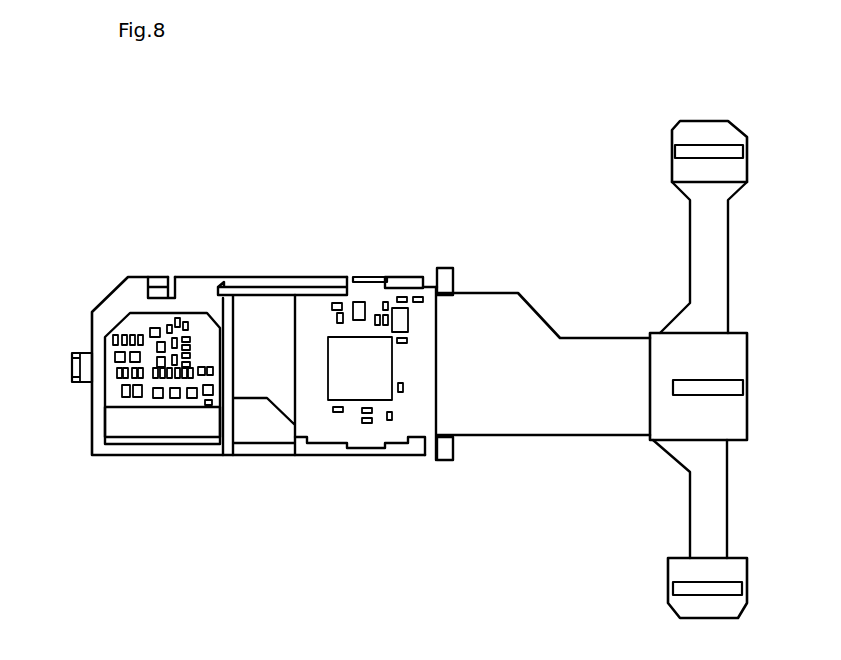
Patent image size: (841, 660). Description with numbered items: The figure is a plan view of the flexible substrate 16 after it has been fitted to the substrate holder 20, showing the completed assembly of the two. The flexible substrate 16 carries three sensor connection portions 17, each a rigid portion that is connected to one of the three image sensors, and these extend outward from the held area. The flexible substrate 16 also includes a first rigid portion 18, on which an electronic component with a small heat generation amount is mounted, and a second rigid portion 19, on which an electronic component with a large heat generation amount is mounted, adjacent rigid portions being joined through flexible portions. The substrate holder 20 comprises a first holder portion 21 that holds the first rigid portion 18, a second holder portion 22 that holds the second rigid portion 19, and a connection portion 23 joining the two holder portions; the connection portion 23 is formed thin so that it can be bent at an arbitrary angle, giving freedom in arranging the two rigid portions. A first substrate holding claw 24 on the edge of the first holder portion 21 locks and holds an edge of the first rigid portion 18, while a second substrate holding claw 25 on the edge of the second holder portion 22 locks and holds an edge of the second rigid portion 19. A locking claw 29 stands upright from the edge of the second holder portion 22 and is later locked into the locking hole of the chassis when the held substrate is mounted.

The flexible substrate 16 is at (547, 446).
The sensor connection portion 17 is at (738, 168).
The first rigid portion 18 is at (363, 438).
The second rigid portion 19 is at (158, 425).
The substrate holder 20 is at (221, 265).
The first holder portion 21 is at (368, 276).
The second holder portion 22 is at (127, 297).
The connection portion 23 is at (258, 448).
The first substrate holding claw 24 is at (407, 281).
The second substrate holding claw 25 is at (157, 277).
The locking claw 29 is at (68, 363).